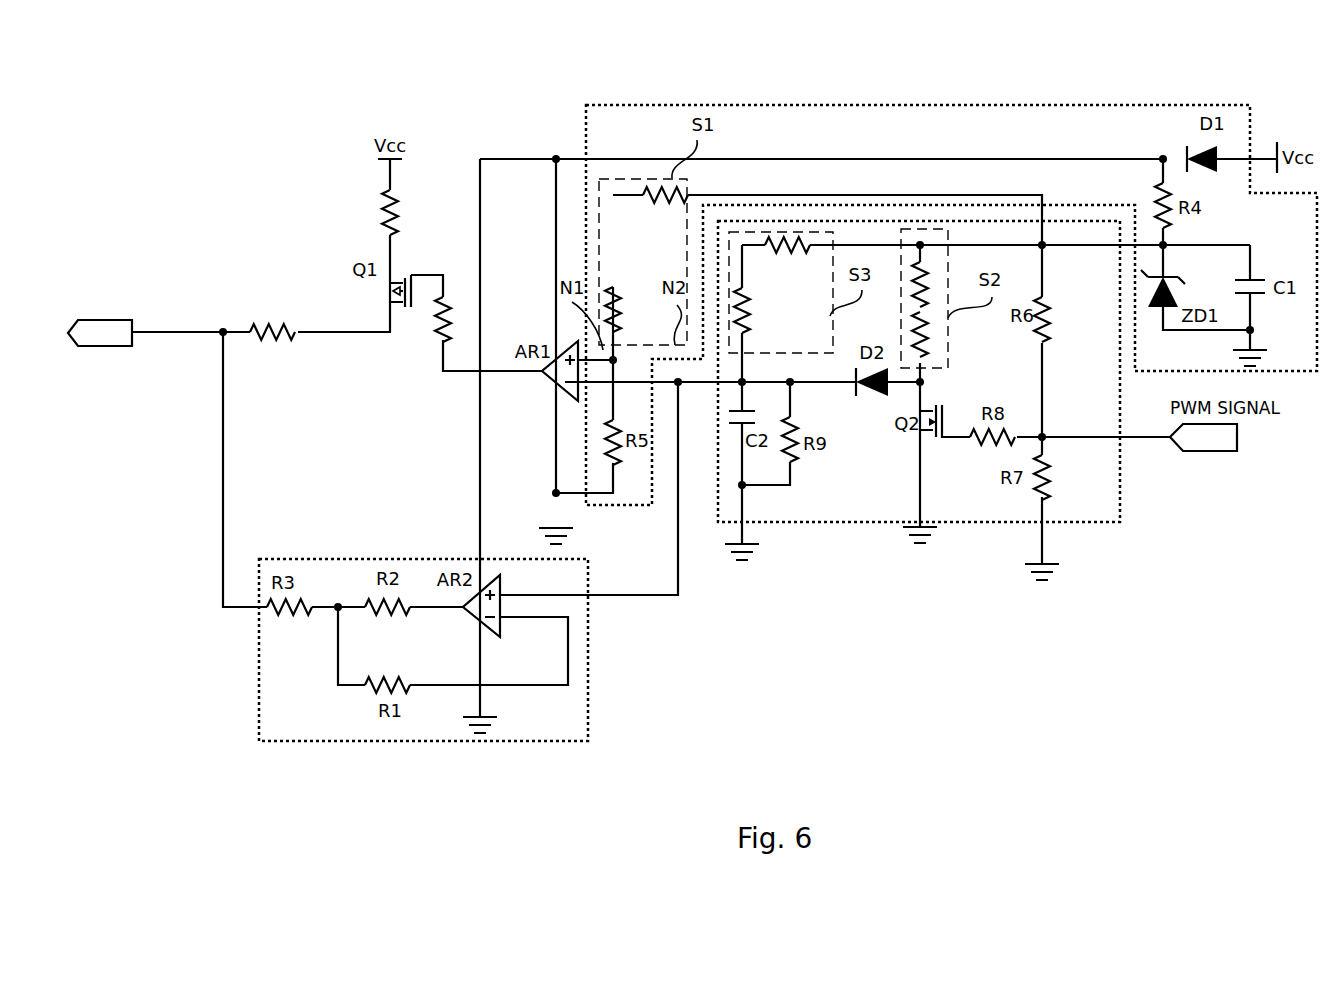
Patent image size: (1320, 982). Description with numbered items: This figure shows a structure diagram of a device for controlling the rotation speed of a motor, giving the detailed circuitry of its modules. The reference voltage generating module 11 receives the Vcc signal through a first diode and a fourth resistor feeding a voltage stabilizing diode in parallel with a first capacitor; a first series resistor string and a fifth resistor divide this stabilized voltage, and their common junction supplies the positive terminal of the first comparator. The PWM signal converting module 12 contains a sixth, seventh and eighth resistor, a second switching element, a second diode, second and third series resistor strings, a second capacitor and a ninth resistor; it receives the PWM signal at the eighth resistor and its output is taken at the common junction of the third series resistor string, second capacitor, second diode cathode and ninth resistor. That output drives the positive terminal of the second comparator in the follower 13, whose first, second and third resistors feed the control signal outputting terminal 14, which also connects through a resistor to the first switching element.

The reference voltage generating module 11 is at (1000, 106).
The PWM signal converting module 12 is at (1120, 522).
The follower 13 is at (588, 741).
The control signal outputting terminal 14 is at (117, 330).